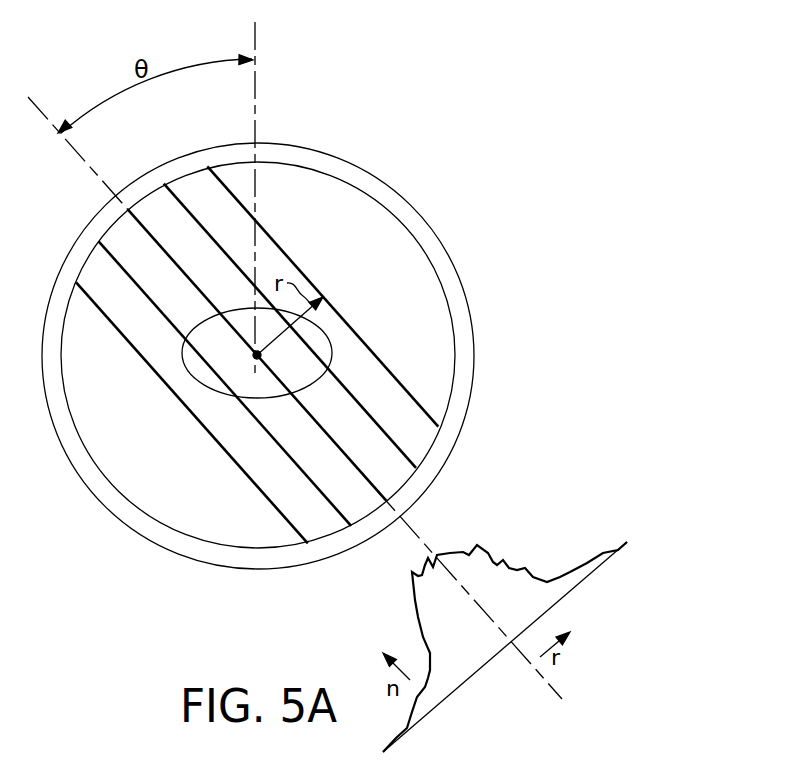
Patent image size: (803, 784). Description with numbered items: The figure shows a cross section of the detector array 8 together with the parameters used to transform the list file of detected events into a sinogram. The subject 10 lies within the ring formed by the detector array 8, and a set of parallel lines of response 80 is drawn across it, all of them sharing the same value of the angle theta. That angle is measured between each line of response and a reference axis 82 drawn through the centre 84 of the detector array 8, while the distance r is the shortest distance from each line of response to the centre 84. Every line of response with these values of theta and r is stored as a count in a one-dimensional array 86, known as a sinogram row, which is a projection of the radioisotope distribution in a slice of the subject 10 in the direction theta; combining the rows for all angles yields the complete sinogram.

The reference axis 82 is at (255, 41).
The detector array 8 is at (365, 172).
The crystal orientation lines 80 is at (387, 358).
The centre of the detector array 84 is at (253, 355).
The subject 10 is at (198, 383).
The one-dimensional array 86 is at (610, 553).